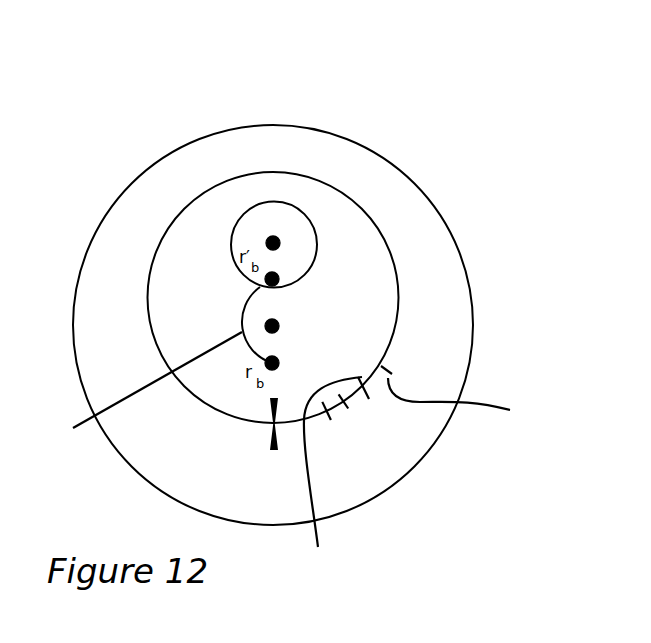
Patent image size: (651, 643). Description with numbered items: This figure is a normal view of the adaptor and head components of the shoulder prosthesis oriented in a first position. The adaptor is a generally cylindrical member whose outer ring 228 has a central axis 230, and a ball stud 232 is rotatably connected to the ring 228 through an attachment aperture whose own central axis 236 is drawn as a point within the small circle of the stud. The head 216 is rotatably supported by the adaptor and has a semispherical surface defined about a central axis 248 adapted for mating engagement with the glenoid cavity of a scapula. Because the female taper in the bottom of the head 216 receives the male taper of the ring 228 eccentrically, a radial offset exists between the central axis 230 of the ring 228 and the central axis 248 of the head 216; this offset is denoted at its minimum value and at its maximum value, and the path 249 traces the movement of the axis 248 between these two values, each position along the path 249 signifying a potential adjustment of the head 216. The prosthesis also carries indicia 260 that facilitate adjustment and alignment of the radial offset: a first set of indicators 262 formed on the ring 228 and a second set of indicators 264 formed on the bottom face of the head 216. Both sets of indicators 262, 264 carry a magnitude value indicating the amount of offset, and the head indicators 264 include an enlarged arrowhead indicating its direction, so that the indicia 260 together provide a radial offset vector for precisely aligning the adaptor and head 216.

The head 216 is at (438, 437).
The outer ring 228 is at (227, 181).
The ball stud 232 is at (276, 202).
The central axis of attachment aperture 236 is at (276, 241).
The central axis of head 248 is at (276, 278).
The central axis of ring 230 is at (276, 326).
The path 249 is at (132, 392).
The indicia 260 is at (347, 405).
The first set of indicators 262 is at (331, 478).
The second set of indicators 264 is at (475, 403).